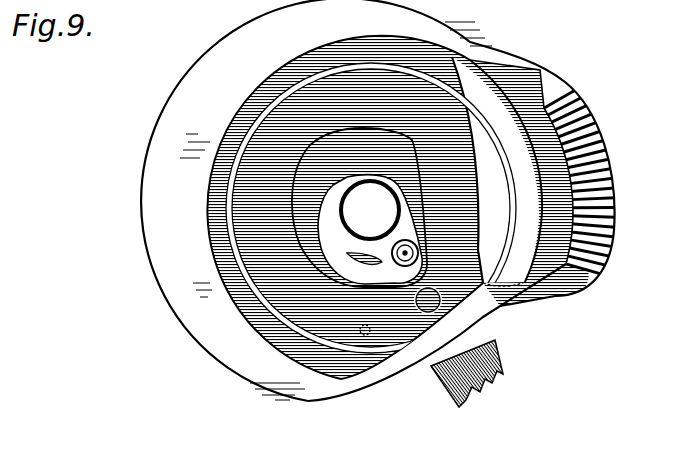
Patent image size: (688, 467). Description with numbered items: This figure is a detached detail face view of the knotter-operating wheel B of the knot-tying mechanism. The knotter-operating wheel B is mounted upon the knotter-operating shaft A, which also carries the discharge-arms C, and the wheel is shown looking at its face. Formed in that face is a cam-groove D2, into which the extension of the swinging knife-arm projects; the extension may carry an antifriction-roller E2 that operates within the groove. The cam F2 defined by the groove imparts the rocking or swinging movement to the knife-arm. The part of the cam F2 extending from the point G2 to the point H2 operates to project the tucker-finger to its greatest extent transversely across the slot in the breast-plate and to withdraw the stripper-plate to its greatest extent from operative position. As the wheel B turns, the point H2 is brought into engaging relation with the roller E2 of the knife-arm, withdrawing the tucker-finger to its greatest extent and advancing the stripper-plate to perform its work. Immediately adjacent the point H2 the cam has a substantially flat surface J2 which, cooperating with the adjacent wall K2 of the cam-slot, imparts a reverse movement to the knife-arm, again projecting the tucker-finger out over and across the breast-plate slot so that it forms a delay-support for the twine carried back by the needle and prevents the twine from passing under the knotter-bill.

The knotter-operating wheel B is at (229, 60).
The point of the cam G2 is at (440, 112).
The cam F2 is at (230, 182).
The cam-groove D2 is at (255, 215).
The knotter-operating shaft A is at (363, 213).
The wall of the cam-slot K2 is at (370, 290).
The antifriction-roller E2 is at (365, 332).
The flat surface of the cam J2 is at (405, 266).
The discharge-arms C is at (493, 365).
The point of the cam H2 is at (480, 287).